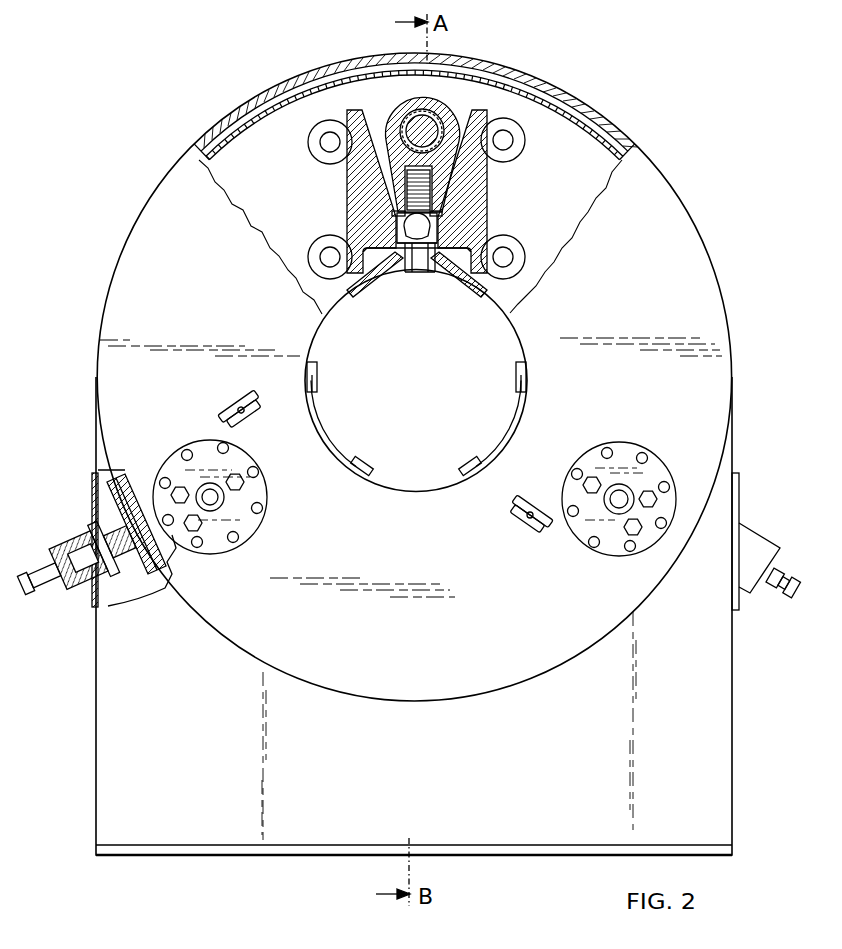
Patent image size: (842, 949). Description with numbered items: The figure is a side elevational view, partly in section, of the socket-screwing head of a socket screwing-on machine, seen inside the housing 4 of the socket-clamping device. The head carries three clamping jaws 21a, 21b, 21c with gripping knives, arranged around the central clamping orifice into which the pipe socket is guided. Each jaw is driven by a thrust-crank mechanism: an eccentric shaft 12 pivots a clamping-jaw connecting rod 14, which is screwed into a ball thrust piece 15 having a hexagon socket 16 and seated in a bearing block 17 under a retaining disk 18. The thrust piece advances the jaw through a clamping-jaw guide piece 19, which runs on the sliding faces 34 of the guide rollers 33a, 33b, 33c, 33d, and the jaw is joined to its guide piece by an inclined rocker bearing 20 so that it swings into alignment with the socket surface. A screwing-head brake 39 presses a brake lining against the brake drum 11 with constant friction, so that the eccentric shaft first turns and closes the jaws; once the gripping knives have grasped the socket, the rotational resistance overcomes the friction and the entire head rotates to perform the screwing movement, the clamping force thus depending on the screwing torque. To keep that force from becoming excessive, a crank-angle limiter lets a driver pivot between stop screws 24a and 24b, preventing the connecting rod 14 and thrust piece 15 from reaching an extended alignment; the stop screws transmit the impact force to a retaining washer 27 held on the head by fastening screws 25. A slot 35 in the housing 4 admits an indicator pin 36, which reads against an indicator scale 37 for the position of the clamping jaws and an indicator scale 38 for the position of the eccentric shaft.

The housing of the socket-clamping device 4 is at (592, 103).
The brake drum 11 is at (223, 132).
The eccentric shaft 12 is at (452, 113).
The clamping-jaw connecting rod 14 is at (392, 188).
The ball thrust piece 15 is at (433, 228).
The hexagon socket 16 is at (405, 273).
The bearing block 17 is at (406, 233).
The retaining disk 18 is at (436, 206).
The clamping-jaw guide piece 19 is at (483, 188).
The inclined rocker bearing 20 is at (430, 273).
The clamping jaw with gripping knives 21a is at (357, 294).
The clamping jaw with gripping knives 21b is at (322, 410).
The clamping jaw with gripping knives 21c is at (507, 423).
The stop screw 24a is at (588, 478).
The stop screw 24b is at (625, 527).
The fastening screw 25 is at (581, 542).
The retaining washer 27 is at (623, 440).
The guide roller 33a is at (308, 148).
The guide roller 33b is at (524, 141).
The guide roller 33c is at (309, 250).
The guide roller 33d is at (524, 250).
The sliding face 34 is at (480, 286).
The slot in the housing 35 is at (515, 500).
The indicator pin 36 is at (538, 528).
The indicator scale for the position of the clamping jaws 37 is at (509, 511).
The indicator scale for the position of the eccentric shaft 38 is at (633, 490).
The screwing-head brake 39 is at (158, 588).